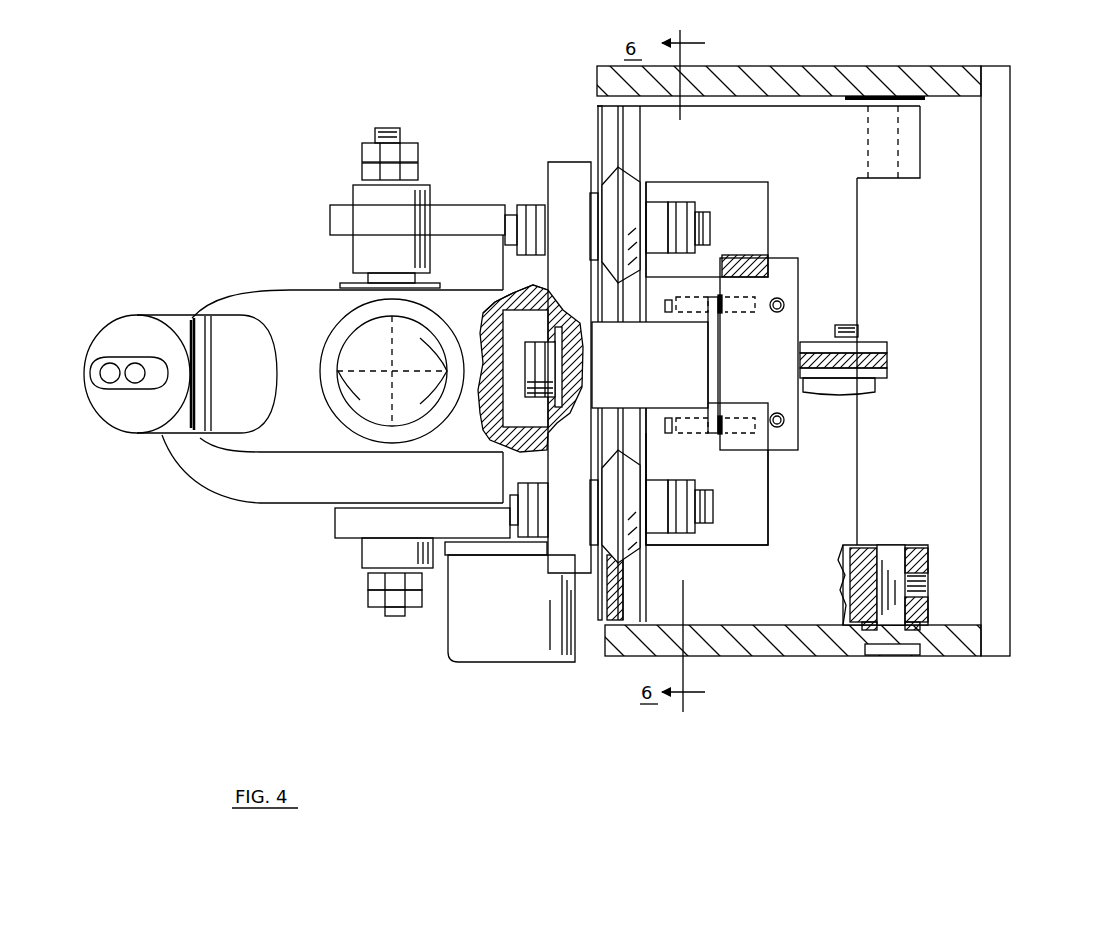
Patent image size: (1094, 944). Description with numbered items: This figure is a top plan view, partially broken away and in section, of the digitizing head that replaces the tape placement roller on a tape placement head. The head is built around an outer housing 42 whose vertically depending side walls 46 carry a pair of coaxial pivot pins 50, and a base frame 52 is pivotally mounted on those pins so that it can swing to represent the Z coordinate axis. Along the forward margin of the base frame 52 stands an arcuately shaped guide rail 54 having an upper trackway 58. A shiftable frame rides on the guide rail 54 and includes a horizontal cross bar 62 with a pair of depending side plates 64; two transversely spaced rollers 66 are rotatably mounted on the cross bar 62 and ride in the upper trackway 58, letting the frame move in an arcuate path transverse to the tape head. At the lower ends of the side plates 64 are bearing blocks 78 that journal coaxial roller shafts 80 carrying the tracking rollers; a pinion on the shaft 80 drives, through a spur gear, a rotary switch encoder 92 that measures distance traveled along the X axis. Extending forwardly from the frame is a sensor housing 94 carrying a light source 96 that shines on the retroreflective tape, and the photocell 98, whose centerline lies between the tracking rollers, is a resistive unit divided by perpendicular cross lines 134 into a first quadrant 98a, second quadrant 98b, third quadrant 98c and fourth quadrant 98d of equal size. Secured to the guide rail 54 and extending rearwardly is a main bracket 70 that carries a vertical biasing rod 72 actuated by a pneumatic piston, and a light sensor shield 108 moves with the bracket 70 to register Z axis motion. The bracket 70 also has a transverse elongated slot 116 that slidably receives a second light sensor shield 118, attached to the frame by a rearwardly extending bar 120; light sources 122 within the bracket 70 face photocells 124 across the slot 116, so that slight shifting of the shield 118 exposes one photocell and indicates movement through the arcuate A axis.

The outer housing 42 is at (1020, 252).
The side walls 46 is at (920, 80).
The pivot pins 50 is at (900, 175).
The base frame 52 is at (790, 628).
The guide rail 54 is at (650, 577).
The upper trackway 58 is at (600, 140).
The cross bar 62 is at (558, 180).
The side plates 64 is at (465, 210).
The rollers 66 is at (628, 195).
The main bracket 70 is at (805, 330).
The biasing rod 72 is at (752, 260).
The bearing blocks 78 is at (367, 247).
The roller shafts 80 is at (387, 128).
The rotary switch encoder 92 is at (498, 640).
The sensor housing 94 is at (243, 490).
The light source 96 is at (195, 322).
The photocell 98 is at (318, 396).
The first quadrant 98a is at (412, 345).
The second quadrant 98b is at (355, 340).
The third quadrant 98c is at (362, 405).
The fourth quadrant 98d is at (410, 405).
The light sensor shield 108 is at (862, 348).
The elongated slot 116 is at (712, 440).
The light sensor shield 118 is at (712, 378).
The bar 120 is at (600, 340).
The light sources 122 is at (725, 303).
The photocells 124 is at (705, 300).
The cross lines 134 is at (427, 375).